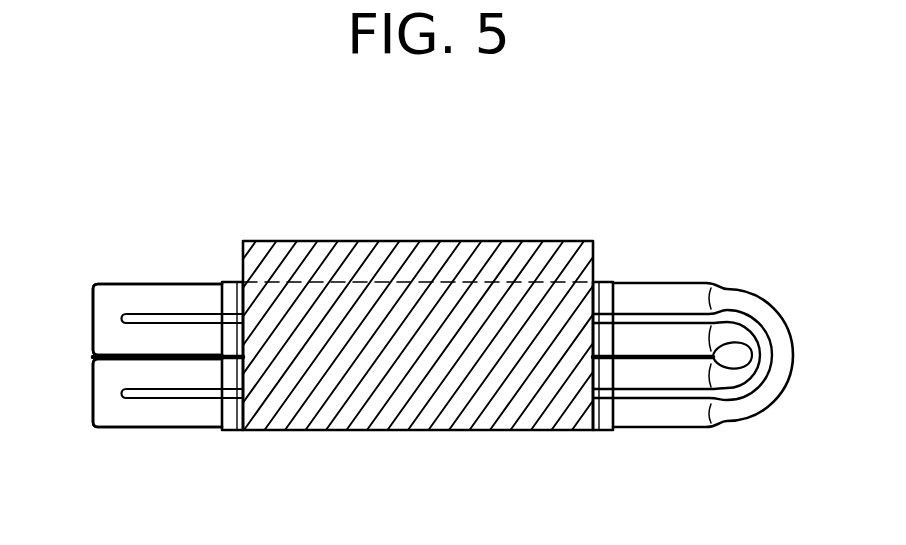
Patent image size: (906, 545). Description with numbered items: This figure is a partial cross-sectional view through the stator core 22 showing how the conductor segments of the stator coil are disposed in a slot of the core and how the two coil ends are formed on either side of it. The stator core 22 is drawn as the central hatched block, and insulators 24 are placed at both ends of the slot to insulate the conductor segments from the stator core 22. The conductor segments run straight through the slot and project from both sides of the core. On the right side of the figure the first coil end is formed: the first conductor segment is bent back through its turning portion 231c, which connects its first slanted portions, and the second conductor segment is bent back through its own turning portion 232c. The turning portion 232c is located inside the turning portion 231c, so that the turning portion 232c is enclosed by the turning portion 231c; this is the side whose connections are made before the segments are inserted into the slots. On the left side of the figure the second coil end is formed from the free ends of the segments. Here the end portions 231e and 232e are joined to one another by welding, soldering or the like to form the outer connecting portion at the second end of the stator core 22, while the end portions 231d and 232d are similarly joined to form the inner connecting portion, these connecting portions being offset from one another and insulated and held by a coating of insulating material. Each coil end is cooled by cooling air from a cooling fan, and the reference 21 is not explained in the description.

The terminal 21 is at (175, 237).
The stator core 22 is at (403, 260).
The insulator 24 is at (603, 292).
The end portion 231e is at (133, 302).
The end portion 232e is at (115, 337).
The end portion 231d is at (133, 415).
The end portion 232d is at (105, 377).
The turning portion 231c is at (780, 363).
The turning portion 232c is at (748, 370).